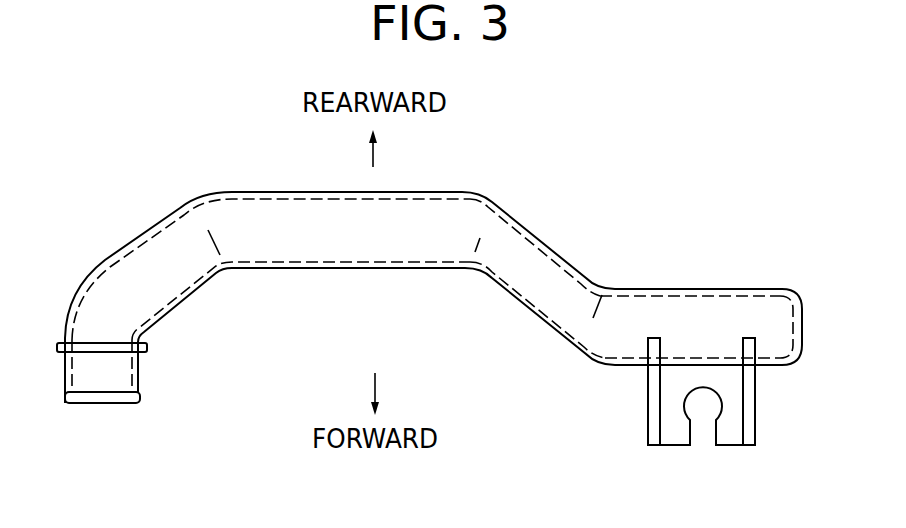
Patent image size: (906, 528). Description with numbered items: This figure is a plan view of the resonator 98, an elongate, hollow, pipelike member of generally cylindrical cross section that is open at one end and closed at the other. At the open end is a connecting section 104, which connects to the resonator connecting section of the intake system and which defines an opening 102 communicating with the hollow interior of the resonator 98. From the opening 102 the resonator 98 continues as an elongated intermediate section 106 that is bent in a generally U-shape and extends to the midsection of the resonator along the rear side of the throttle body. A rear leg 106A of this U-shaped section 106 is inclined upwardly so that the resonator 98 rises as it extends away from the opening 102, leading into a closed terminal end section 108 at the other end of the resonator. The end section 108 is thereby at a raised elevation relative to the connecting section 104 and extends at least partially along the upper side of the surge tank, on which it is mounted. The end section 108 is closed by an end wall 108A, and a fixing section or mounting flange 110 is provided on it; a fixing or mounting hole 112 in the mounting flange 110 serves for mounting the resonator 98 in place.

The resonator 98 is at (532, 187).
The opening 102 is at (98, 404).
The connecting section 104 is at (118, 368).
The intermediate section 106 is at (263, 218).
The rear leg 106A is at (533, 302).
The end section 108 is at (700, 310).
The end wall 108A is at (802, 317).
The mounting flange 110 is at (667, 387).
The mounting hole 112 is at (700, 423).